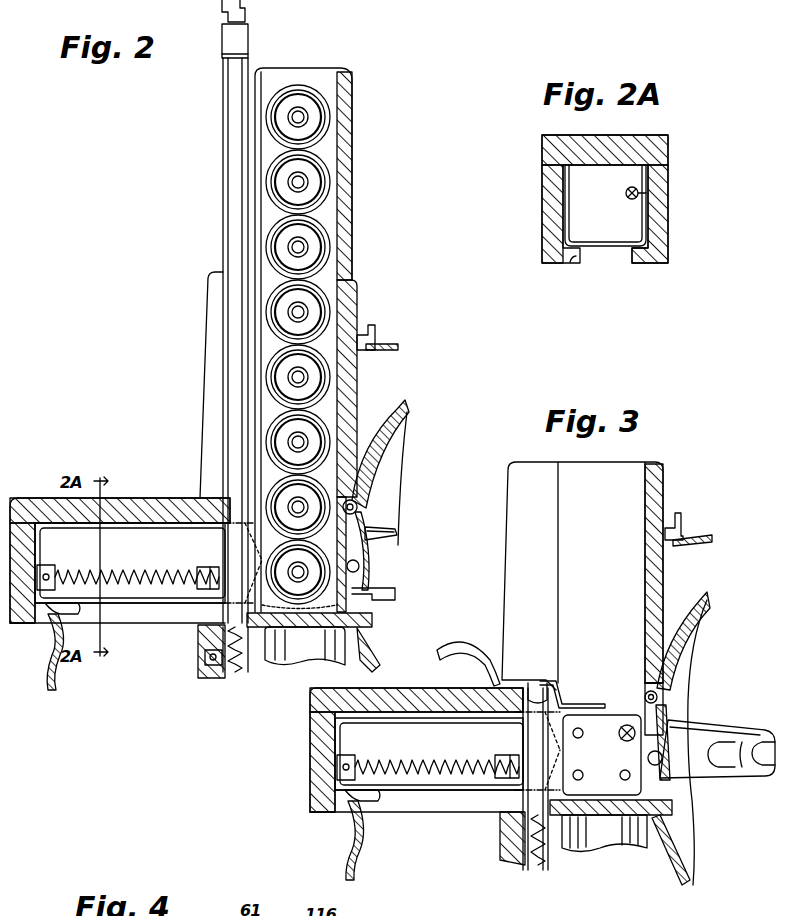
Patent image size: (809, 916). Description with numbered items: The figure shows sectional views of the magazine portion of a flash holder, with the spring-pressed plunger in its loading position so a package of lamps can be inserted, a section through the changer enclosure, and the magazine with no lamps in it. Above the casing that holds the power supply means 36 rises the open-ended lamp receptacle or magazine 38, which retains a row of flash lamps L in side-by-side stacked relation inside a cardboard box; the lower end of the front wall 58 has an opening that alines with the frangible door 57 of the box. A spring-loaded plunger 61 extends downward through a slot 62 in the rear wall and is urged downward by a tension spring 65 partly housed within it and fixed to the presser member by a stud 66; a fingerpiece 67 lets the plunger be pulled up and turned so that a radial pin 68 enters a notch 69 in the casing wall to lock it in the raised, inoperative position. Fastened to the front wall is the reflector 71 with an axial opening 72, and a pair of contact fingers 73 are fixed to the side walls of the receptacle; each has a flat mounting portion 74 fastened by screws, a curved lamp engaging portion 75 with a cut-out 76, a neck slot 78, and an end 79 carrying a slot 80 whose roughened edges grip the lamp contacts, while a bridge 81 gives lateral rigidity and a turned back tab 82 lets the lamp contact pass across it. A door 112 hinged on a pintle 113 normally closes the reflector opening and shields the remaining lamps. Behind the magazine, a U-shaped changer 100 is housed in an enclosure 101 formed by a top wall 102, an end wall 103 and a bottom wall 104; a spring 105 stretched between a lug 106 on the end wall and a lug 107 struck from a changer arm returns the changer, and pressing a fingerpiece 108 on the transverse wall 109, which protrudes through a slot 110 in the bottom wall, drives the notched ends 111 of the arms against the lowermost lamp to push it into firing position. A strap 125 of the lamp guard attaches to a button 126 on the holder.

In FIG. 3, the power supply means 36 is at (605, 840).
In FIG. 2, the lamp receptacle or magazine 38 is at (365, 300).
In FIG. 2, the door 57 is at (370, 590).
In FIG. 2, the front wall 58 is at (355, 395).
In FIG. 2, the spring-loaded plunger 61 is at (232, 128).
In FIG. 3, the spring-loaded plunger 61 is at (537, 779).
In FIG. 2, the slot 62 is at (212, 342).
In FIG. 3, the slot 62 is at (518, 568).
In FIG. 3, the tension spring 65 is at (505, 850).
In FIG. 2, the stud 66 is at (243, 28).
In FIG. 3, the stud 66 is at (535, 678).
In FIG. 2, the fingerpiece 67 is at (245, 10).
In FIG. 3, the fingerpiece 67 is at (455, 650).
In FIG. 2, the pin 68 is at (213, 665).
In FIG. 2, the notch 69 is at (215, 668).
In FIG. 2, the reflector 71 is at (405, 468).
In FIG. 3, the reflector 71 is at (685, 640).
In FIG. 3, the opening 72 is at (670, 690).
In FIG. 2, the contact fingers 73 is at (385, 540).
In FIG. 3, the contact fingers 73 is at (725, 725).
In FIG. 3, the flat mounting portion 74 is at (605, 712).
In FIG. 3, the lamp engaging portion 75 is at (670, 720).
In FIG. 3, the cut-out 76 is at (710, 835).
In FIG. 3, the slot 78 is at (672, 812).
In FIG. 3, the end 79 is at (765, 732).
In FIG. 3, the slot 80 is at (785, 752).
In FIG. 3, the bridge 81 is at (745, 768).
In FIG. 3, the turned back tab 82 is at (725, 770).
In FIG. 2, the flash lamps L is at (318, 112).
In FIG. 2, the U-shaped changer 100 is at (130, 540).
In FIG. 2A, the U-shaped changer 100 is at (553, 185).
In FIG. 2, the enclosure 101 is at (32, 498).
In FIG. 3, the enclosure 101 is at (300, 700).
In FIG. 2, the top wall 102 is at (108, 508).
In FIG. 3, the top wall 102 is at (385, 695).
In FIG. 2, the end wall 103 is at (25, 622).
In FIG. 2A, the end wall 103 is at (548, 215).
In FIG. 3, the end wall 103 is at (330, 812).
In FIG. 2, the bottom wall 104 is at (138, 630).
In FIG. 2A, the bottom wall 104 is at (550, 276).
In FIG. 2, the spring 105 is at (96, 576).
In FIG. 2A, the spring 105 is at (626, 195).
In FIG. 3, the spring 105 is at (335, 768).
In FIG. 2, the lug 106 is at (49, 575).
In FIG. 3, the lug 106 is at (372, 760).
In FIG. 2, the lug 107 is at (215, 570).
In FIG. 2A, the lug 107 is at (655, 147).
In FIG. 3, the lug 107 is at (515, 757).
In FIG. 2, the fingerpiece 108 is at (58, 665).
In FIG. 3, the fingerpiece 108 is at (357, 860).
In FIG. 2, the transverse wall 109 is at (72, 614).
In FIG. 2A, the transverse wall 109 is at (604, 250).
In FIG. 3, the transverse wall 109 is at (372, 800).
In FIG. 2, the slot 110 is at (175, 618).
In FIG. 3, the slot 110 is at (475, 800).
In FIG. 3, the notched ends 111 is at (580, 695).
In FIG. 2, the door 112 is at (362, 566).
In FIG. 3, the door 112 is at (650, 762).
In FIG. 2, the pintle 113 is at (357, 505).
In FIG. 2, the strap 125 is at (392, 358).
In FIG. 3, the strap 125 is at (712, 560).
In FIG. 2, the button 126 is at (372, 340).
In FIG. 3, the button 126 is at (680, 528).